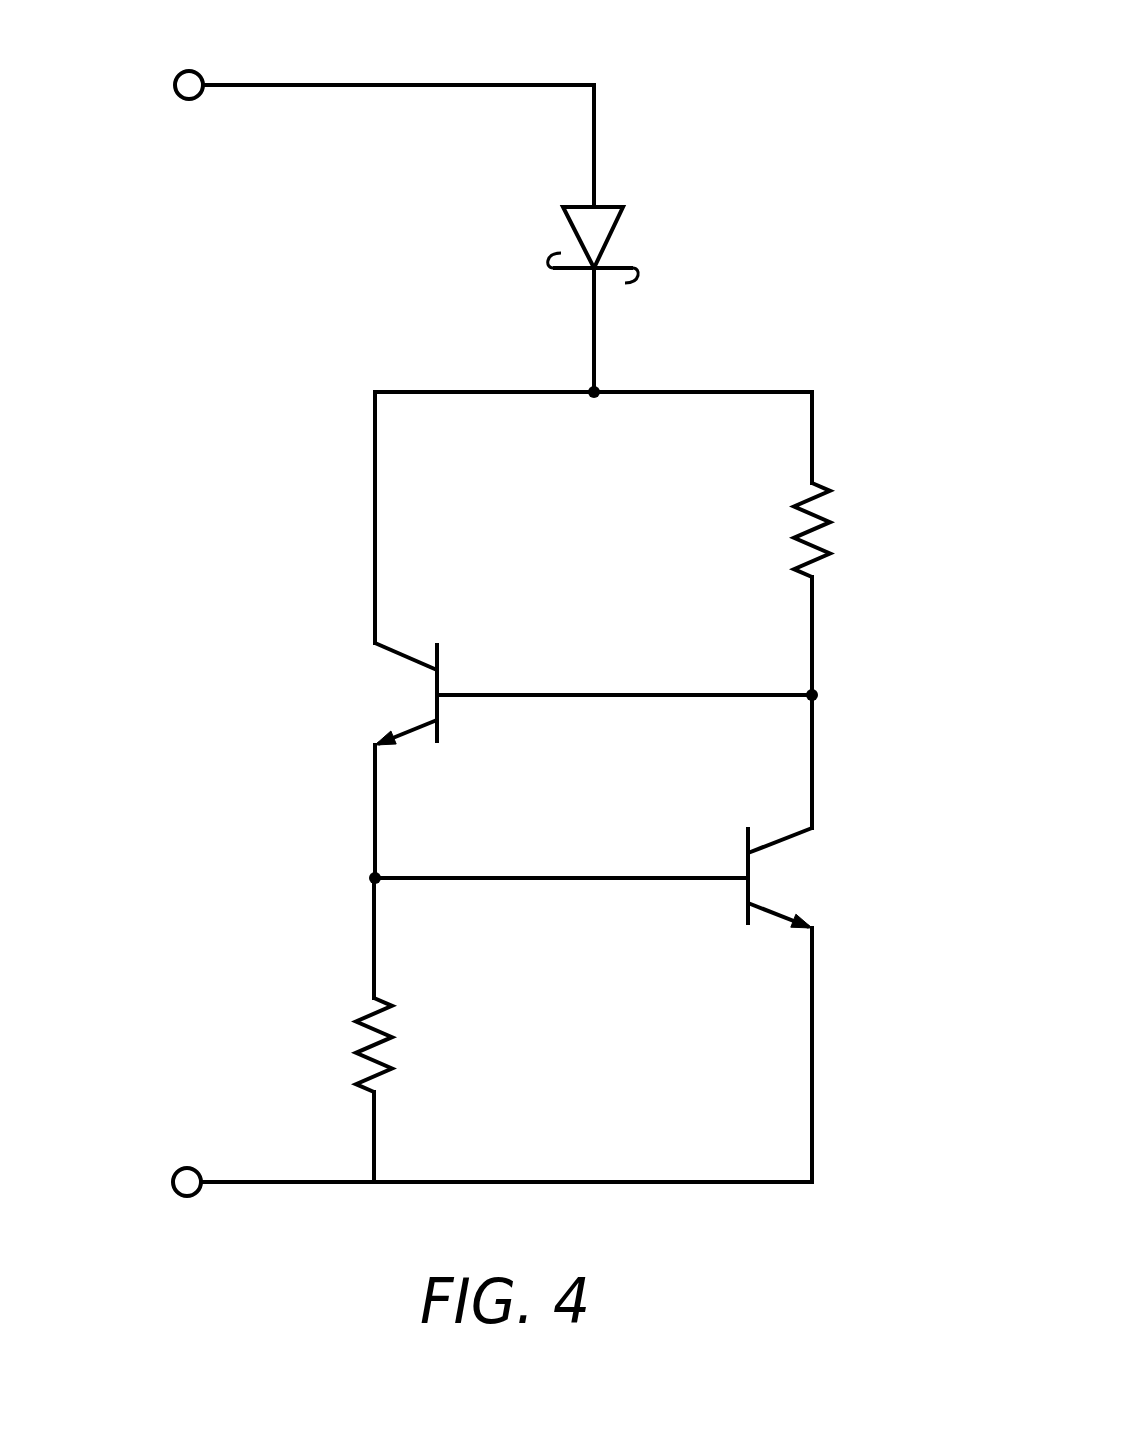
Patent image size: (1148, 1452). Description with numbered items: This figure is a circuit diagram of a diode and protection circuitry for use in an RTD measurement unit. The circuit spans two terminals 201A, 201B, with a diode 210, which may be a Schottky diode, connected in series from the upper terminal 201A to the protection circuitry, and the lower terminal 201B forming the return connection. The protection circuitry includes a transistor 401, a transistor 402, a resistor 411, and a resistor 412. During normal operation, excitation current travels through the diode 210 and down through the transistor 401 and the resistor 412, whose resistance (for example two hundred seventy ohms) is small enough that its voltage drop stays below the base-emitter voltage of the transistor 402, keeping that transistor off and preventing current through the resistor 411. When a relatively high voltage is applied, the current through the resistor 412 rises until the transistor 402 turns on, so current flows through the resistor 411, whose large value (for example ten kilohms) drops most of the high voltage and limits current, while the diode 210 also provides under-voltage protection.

The first terminal 201A is at (191, 70).
The second terminal 201B is at (190, 1167).
The diode 210 is at (612, 207).
The transistor 401 is at (439, 649).
The transistor 402 is at (747, 842).
The resistor 411 is at (824, 528).
The resistor 412 is at (388, 1014).